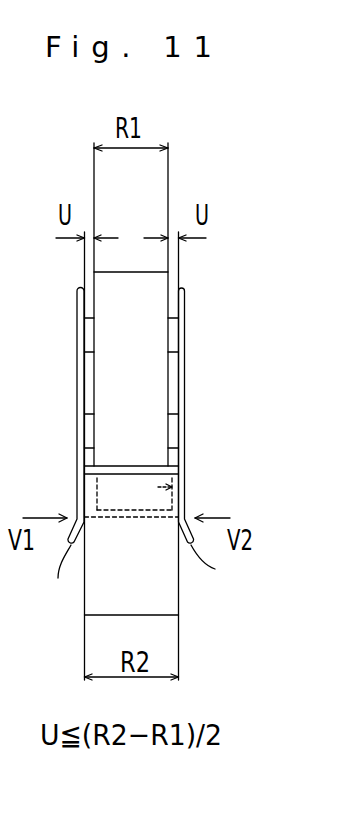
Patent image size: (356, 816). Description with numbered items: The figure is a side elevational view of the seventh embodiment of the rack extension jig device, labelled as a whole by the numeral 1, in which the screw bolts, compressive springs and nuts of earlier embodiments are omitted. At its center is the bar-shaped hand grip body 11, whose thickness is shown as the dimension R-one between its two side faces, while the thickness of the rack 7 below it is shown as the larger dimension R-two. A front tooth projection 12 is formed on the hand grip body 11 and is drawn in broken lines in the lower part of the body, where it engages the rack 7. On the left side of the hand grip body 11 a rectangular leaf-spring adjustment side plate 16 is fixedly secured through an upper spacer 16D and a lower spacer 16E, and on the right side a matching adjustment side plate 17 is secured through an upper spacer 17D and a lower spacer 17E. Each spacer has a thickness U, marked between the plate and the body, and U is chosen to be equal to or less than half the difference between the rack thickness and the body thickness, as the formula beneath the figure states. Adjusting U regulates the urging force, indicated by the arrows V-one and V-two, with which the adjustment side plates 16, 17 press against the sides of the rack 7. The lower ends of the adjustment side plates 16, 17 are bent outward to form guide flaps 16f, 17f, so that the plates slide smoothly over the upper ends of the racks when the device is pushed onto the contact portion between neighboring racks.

The battery 1 is at (197, 276).
The rack 7 is at (188, 456).
The hand grip body 11 is at (129, 272).
The front tooth projection 12 is at (188, 481).
The adjustment side plate 16 is at (78, 380).
The upper spacer 16D is at (88, 330).
The lower spacer 16E is at (90, 428).
The guide flap 16f is at (52, 577).
The adjustment side plate 17 is at (185, 380).
The upper spacer 17D is at (185, 323).
The lower spacer 17E is at (178, 428).
The guide flap 17f is at (225, 569).